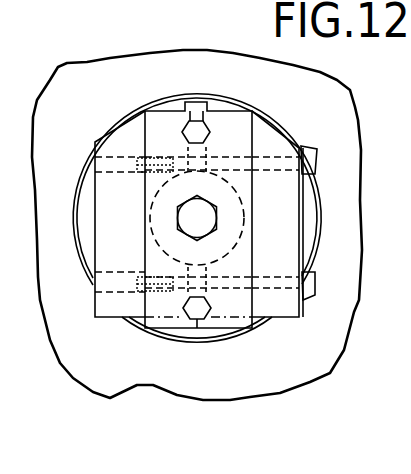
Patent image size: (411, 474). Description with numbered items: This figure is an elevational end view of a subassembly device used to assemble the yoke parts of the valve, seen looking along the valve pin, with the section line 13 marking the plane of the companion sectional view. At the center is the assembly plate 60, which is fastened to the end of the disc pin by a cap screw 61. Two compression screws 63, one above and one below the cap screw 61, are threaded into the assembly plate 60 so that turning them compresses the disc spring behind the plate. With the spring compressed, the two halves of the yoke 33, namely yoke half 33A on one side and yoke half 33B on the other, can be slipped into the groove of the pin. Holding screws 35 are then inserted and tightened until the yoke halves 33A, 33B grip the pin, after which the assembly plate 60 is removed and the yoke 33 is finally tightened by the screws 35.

The section line 13- 13 is at (223, 17).
The yoke 33 is at (288, 143).
The yoke half 33A is at (263, 133).
The yoke half 33B is at (120, 135).
The cap screws 35 is at (310, 163).
The assembly plate 60 is at (223, 129).
The cap screw 61 is at (206, 219).
The compression screws 63 is at (187, 124).